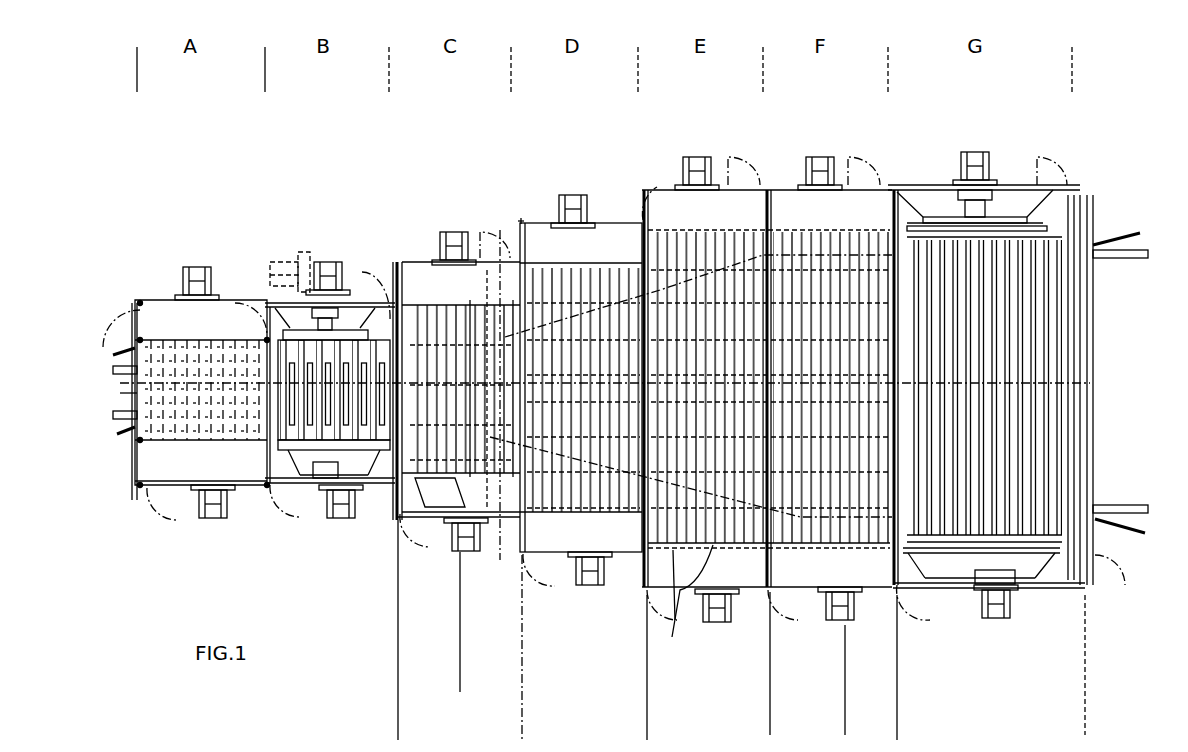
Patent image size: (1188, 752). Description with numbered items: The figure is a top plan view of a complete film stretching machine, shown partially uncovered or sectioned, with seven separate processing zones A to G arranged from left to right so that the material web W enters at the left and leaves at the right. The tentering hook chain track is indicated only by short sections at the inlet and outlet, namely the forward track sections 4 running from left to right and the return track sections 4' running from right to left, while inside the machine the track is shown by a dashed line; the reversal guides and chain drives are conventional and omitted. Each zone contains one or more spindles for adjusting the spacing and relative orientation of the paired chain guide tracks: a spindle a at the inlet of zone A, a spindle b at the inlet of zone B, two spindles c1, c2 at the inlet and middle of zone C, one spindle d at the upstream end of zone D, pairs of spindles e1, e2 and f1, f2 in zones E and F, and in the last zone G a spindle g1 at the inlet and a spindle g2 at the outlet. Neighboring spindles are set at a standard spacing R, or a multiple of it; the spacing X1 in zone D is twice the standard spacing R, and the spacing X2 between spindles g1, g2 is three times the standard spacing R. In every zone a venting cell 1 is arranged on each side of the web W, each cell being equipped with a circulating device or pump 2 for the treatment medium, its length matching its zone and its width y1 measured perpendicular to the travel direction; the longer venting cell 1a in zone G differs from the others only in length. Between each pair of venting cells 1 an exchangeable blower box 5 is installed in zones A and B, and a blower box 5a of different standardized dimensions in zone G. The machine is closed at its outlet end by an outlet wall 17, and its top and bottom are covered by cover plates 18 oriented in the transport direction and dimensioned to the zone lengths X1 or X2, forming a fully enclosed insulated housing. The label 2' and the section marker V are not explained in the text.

The venting cell 1 is at (162, 318).
The venting cell 1a is at (1045, 575).
The circulating device or pump 2 is at (596, 394).
The auxiliary fan 2' is at (276, 269).
The forward track section 4 is at (623, 381).
The return track section 4' is at (612, 387).
The blower box 5 is at (245, 455).
The blower box 5a is at (1065, 337).
The outlet wall 17 is at (1094, 422).
The cover plate 18 is at (684, 606).
The spindle a is at (137, 343).
The spindle b is at (262, 332).
The spindle c1 is at (380, 302).
The spindle c2 is at (456, 262).
The spindle d is at (517, 389).
The spindle e1 is at (640, 230).
The spindle e2 is at (703, 268).
The spindle f1 is at (770, 230).
The spindle f2 is at (831, 245).
The spindle g1 is at (897, 228).
The spindle g2 is at (1090, 200).
The material web W is at (76, 395).
The section line V is at (975, 232).
The width of venting cell y1 is at (135, 440).
The standard spacing R is at (460, 683).
The spacing X1 is at (522, 727).
The spacing X2 is at (1085, 722).